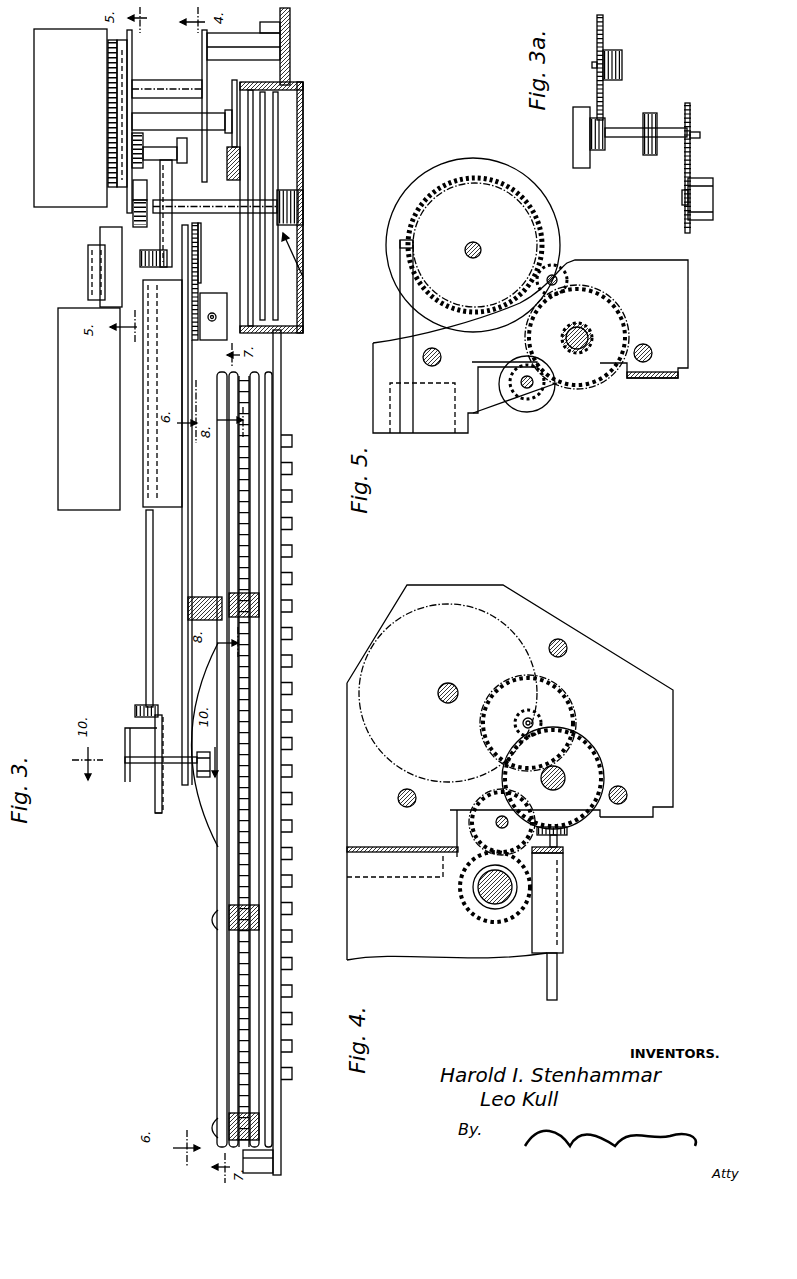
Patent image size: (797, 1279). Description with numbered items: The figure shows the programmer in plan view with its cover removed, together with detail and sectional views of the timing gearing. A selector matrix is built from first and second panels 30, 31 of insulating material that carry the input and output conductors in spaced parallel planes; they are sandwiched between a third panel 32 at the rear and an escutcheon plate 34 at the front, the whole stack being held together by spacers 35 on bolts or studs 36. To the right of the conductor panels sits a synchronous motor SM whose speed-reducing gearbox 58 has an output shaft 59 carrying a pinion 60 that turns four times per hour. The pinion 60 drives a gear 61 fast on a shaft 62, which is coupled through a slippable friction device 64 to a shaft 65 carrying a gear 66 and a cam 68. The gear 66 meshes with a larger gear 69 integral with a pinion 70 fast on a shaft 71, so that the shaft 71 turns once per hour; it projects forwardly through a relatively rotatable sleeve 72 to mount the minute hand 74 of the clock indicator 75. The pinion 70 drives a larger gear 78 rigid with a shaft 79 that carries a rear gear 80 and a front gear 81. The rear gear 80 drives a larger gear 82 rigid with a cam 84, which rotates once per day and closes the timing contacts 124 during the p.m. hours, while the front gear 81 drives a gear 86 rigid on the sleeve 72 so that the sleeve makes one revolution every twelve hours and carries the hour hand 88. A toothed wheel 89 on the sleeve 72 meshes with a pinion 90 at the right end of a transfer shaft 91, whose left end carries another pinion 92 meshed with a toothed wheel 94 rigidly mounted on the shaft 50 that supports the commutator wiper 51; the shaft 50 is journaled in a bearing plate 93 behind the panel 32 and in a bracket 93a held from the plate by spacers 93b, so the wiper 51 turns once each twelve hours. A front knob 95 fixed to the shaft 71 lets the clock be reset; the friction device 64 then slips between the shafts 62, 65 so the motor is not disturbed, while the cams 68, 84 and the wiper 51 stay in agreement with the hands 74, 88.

In FIG. 3, the first panel 30 is at (264, 1098).
In FIG. 3, the second panel 31 is at (243, 1090).
In FIG. 3, the third panel 32 is at (220, 1013).
In FIG. 3, the escutcheon plate 34 is at (281, 1053).
In FIG. 3, the spacers 35 is at (235, 905).
In FIG. 3, the bolts or studs 36 is at (214, 918).
In FIG. 3, the shaft 50 is at (165, 780).
In FIG. 3, the commutator wiper 51 is at (200, 722).
In FIG. 3, the speed-reducing gearbox 58 is at (182, 532).
In FIG. 3, the output shaft 59 is at (218, 340).
In FIG. 3, the pinion 60 is at (182, 332).
In FIG. 4, the pinion 60 is at (470, 900).
In FIG. 3A, the pinion 60 is at (712, 205).
In FIG. 3, the gear 61 is at (201, 268).
In FIG. 4, the gear 61 is at (468, 822).
In FIG. 3A, the gear 61 is at (690, 122).
In FIG. 3A, the shaft 62 is at (690, 133).
In FIG. 3A, the slippable friction device 64 is at (649, 155).
In FIG. 3A, the shaft 65 is at (627, 128).
In FIG. 3, the gear 66 is at (90, 260).
In FIG. 5, the gear 66 is at (540, 392).
In FIG. 3A, the gear 66 is at (600, 150).
In FIG. 3, the cam 68 is at (100, 235).
In FIG. 5, the cam 68 is at (502, 410).
In FIG. 3A, the cam 68 is at (580, 107).
In FIG. 3, the larger gear 69 is at (133, 205).
In FIG. 5, the larger gear 69 is at (590, 388).
In FIG. 4, the larger gear 69 is at (604, 775).
In FIG. 3A, the larger gear 69 is at (603, 22).
In FIG. 3, the pinion 70 is at (133, 188).
In FIG. 5, the pinion 70 is at (585, 325).
In FIG. 3A, the pinion 70 is at (622, 58).
In FIG. 3, the shaft 71 is at (272, 214).
In FIG. 5, the shaft 71 is at (560, 335).
In FIG. 3, the sleeve 72 is at (163, 195).
In FIG. 3, the minute hand 74 is at (268, 165).
In FIG. 3, the clock indicator 75 is at (302, 255).
In FIG. 3, the larger gear 78 is at (142, 100).
In FIG. 4, the larger gear 78 is at (560, 700).
In FIG. 3, the shaft 79 is at (173, 146).
In FIG. 4, the shaft 79 is at (522, 712).
In FIG. 3, the rear gear 80 is at (132, 150).
In FIG. 5, the rear gear 80 is at (562, 266).
In FIG. 3, the front gear 81 is at (185, 128).
In FIG. 4, the front gear 81 is at (530, 712).
In FIG. 3, the larger gear 82 is at (117, 120).
In FIG. 5, the larger gear 82 is at (492, 178).
In FIG. 3, the cam 84 is at (108, 72).
In FIG. 5, the cam 84 is at (404, 191).
In FIG. 3, the gear 86 is at (227, 150).
In FIG. 4, the gear 86 is at (580, 740).
In FIG. 3, the hour hand 88 is at (266, 282).
In FIG. 3, the toothed wheel 89 is at (192, 288).
In FIG. 3, the pinion 90 is at (150, 268).
In FIG. 4, the pinion 90 is at (568, 833).
In FIG. 3, the transfer shaft 91 is at (146, 540).
In FIG. 4, the transfer shaft 91 is at (547, 977).
In FIG. 3, the pinion 92 is at (140, 705).
In FIG. 3, the bearing plate 93 is at (160, 716).
In FIG. 3, the bracket 93a is at (125, 735).
In FIG. 3, the spacers 93b is at (155, 806).
In FIG. 3, the toothed wheel 94 is at (140, 757).
In FIG. 3, the front knob 95 is at (303, 207).
In FIG. 5, the timing contacts 124 is at (400, 252).
In FIG. 3, the synchronous motor SM is at (58, 447).